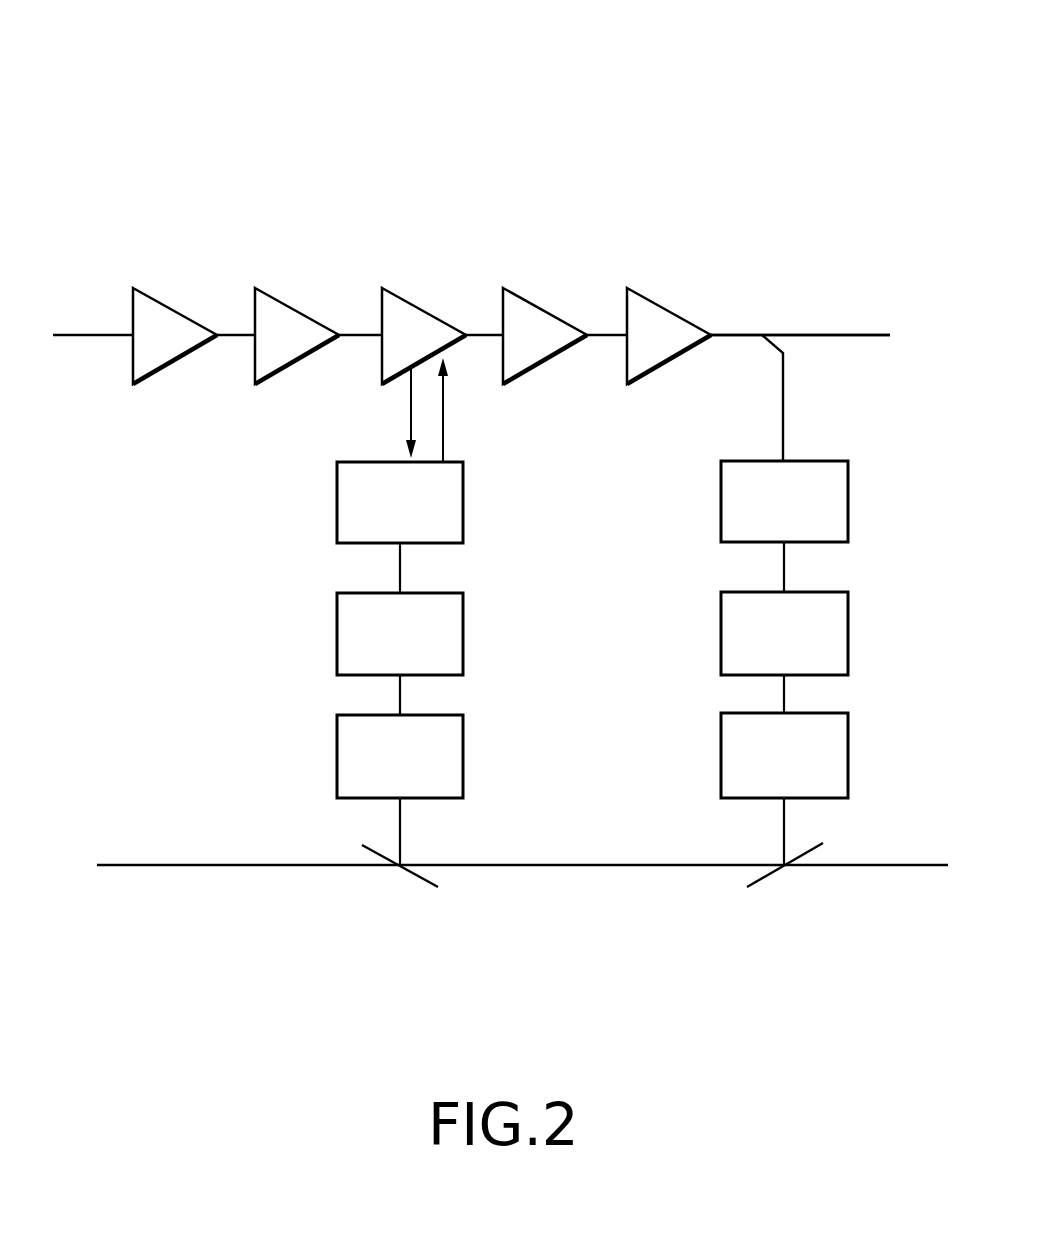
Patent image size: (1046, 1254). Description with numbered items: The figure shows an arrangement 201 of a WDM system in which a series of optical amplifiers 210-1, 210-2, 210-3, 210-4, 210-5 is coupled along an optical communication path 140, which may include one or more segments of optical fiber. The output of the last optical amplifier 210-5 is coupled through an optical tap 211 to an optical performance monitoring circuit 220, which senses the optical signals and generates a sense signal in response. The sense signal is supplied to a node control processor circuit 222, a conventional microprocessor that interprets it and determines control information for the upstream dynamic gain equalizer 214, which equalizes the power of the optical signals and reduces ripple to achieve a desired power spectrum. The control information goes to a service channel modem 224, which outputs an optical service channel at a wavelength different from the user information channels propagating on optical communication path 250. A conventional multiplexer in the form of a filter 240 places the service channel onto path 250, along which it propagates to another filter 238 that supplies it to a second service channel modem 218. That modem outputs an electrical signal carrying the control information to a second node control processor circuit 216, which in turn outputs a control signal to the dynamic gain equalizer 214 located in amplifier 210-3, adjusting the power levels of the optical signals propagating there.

The optical transmission system / amplifier chain 201 is at (582, 132).
The optical amplifier 210-1 is at (172, 302).
The optical amplifier 210-2 is at (302, 300).
The optical amplifier 210-3 is at (425, 302).
The optical amplifier 210-4 is at (545, 300).
The optical amplifier 210-5 is at (668, 302).
The optical tap 211 is at (762, 335).
The optical communication path 140 is at (850, 335).
The dynamic gain equalizer (DGE) 214 is at (337, 495).
The node control processor circuit (NCP) 216 is at (337, 628).
The service channel modem (SCM) 218 is at (337, 755).
The optical performance monitoring (OPM) circuit 220 is at (721, 505).
The node control processor circuit (NCP) 222 is at (721, 634).
The service channel modem (SCM) 224 is at (721, 762).
The filter 238 is at (396, 868).
The filter 240 is at (786, 868).
The optical communication path 250 is at (595, 867).